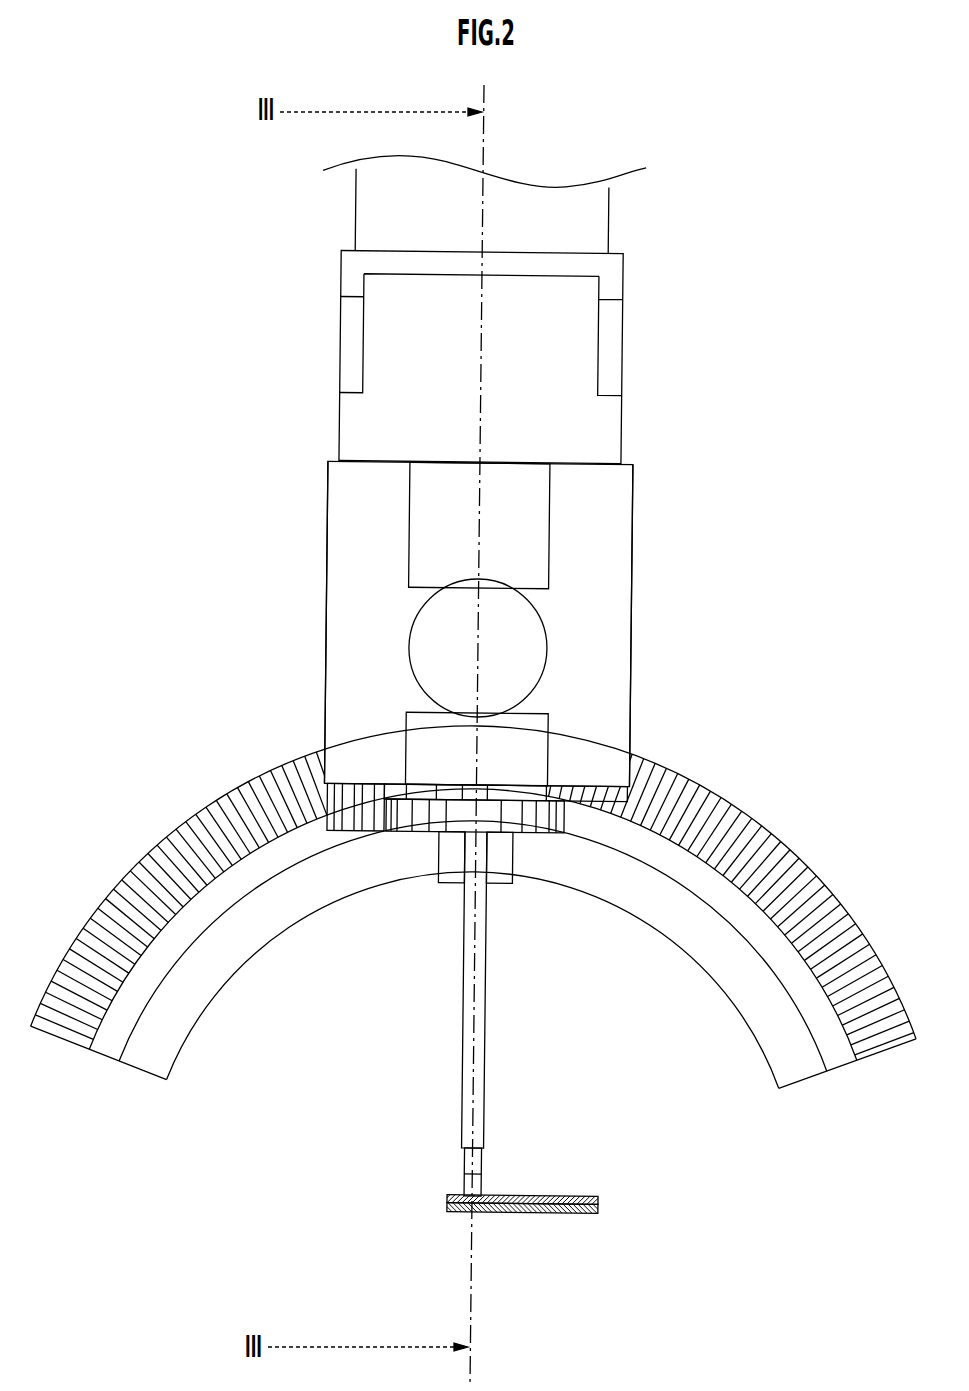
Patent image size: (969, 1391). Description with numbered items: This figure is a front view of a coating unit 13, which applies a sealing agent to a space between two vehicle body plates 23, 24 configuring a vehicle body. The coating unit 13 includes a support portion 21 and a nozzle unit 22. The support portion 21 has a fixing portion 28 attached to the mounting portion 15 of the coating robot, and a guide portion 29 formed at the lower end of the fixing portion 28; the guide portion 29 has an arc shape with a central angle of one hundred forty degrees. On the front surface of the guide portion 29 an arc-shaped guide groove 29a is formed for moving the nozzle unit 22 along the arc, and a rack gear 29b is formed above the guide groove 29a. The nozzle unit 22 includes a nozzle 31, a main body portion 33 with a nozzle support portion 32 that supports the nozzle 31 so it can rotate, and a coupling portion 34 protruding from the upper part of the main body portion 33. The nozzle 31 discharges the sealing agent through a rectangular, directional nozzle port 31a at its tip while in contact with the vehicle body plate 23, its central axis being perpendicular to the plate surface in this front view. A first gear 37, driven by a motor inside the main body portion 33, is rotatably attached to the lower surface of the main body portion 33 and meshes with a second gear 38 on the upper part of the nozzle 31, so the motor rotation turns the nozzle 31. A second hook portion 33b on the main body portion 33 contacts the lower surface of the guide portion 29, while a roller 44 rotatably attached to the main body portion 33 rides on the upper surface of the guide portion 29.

The coating unit 13 is at (730, 264).
The mounting portion 15 is at (588, 221).
The support portion 21 is at (304, 334).
The nozzle unit 22 is at (296, 549).
The vehicle body plate 23 is at (530, 1195).
The vehicle body plate 24 is at (560, 1212).
The fixing portion 28 is at (340, 444).
The guide portion 29 is at (252, 930).
The guide groove 29a is at (103, 1048).
The rack gear 29b is at (233, 818).
The nozzle 31 is at (486, 1025).
The nozzle port 31a is at (452, 1203).
The nozzle support portion 32 is at (548, 763).
The main body portion 33 is at (607, 623).
The second hook portion 33b is at (453, 880).
The coupling portion 34 is at (513, 462).
The first gear 37 is at (377, 833).
The second gear 38 is at (533, 828).
The roller 44 is at (382, 645).